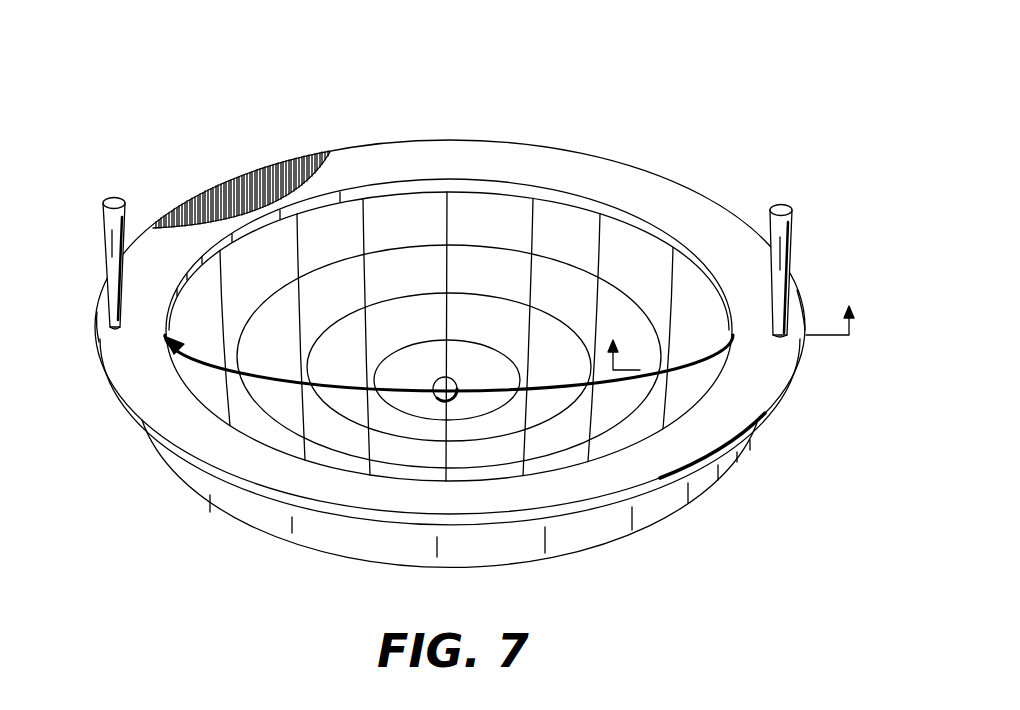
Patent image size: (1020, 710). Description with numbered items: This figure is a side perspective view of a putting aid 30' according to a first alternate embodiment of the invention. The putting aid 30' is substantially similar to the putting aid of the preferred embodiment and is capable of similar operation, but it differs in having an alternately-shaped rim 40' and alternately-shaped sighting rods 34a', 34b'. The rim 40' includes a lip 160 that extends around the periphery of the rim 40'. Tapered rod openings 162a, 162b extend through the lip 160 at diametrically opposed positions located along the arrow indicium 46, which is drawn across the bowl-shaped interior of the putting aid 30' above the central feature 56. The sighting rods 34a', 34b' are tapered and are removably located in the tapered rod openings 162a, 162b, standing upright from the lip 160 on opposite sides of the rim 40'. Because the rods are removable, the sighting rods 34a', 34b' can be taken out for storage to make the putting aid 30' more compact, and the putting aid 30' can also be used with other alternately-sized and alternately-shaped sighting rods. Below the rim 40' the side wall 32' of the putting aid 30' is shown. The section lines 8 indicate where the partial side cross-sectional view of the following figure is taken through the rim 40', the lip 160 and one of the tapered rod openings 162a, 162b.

The putting aid 30′ is at (449, 122).
The rim 40′ is at (660, 197).
The lip 160 is at (777, 400).
The cylindrical side wall 32′ is at (673, 514).
The arrow indicium 46 is at (272, 380).
The center knob 56 is at (441, 377).
The sighting rod 34a′ is at (106, 220).
The sighting rod 34b′ is at (772, 222).
The tapered rod opening 162a is at (100, 324).
The tapered rod opening 162b is at (797, 290).
The section lines 8— 8 is at (734, 327).